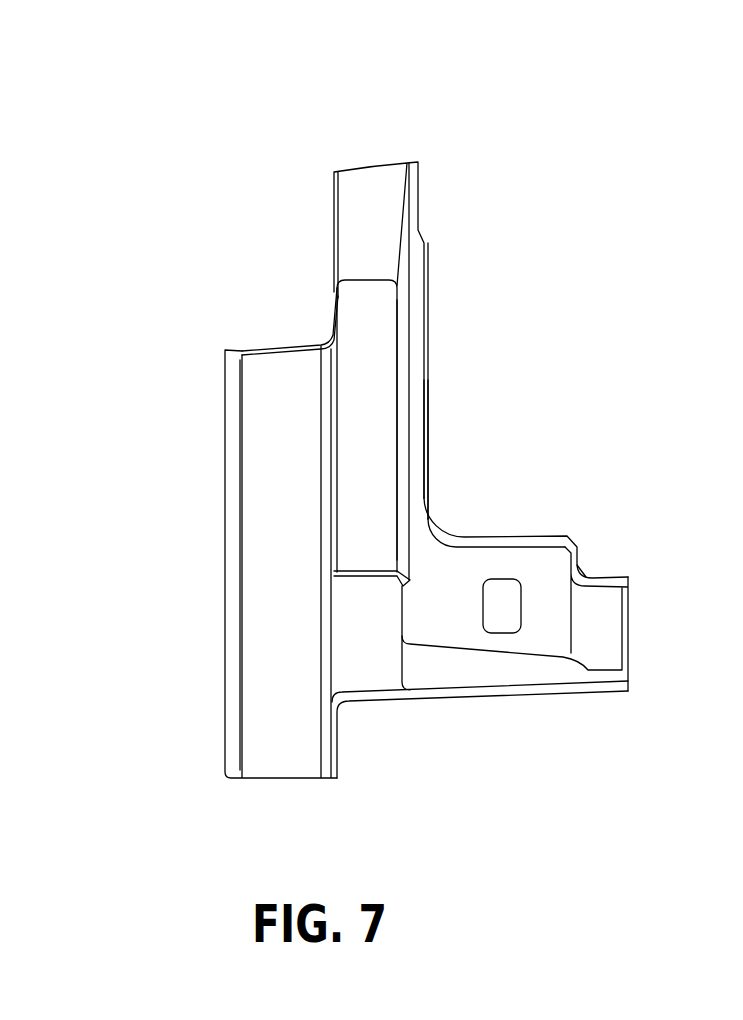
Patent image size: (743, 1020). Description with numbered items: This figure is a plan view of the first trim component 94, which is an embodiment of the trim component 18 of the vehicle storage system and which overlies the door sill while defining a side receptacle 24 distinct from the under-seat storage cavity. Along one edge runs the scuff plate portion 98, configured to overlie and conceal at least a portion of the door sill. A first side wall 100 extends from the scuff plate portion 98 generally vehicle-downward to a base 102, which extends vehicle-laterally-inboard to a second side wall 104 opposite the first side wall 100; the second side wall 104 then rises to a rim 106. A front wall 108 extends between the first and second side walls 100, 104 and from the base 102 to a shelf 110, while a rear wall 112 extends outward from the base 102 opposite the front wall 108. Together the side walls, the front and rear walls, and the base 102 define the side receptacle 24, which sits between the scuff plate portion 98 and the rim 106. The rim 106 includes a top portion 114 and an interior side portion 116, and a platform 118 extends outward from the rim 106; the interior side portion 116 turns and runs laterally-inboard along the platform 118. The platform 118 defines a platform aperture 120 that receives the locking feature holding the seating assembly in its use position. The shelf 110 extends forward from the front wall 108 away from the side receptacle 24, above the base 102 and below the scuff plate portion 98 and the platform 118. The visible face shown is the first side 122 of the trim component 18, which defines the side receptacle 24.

The trim component 18 is at (515, 153).
The side receptacle 24 is at (366, 468).
The first trim component 94 is at (467, 155).
The scuff plate portion 98 is at (260, 597).
The first side wall 100 is at (335, 350).
The base 102 is at (354, 402).
The second side wall 104 is at (400, 432).
The rim 106 is at (413, 330).
The front wall 108 is at (363, 570).
The shelf 110 is at (344, 651).
The rear wall 112 is at (358, 229).
The top portion 114 is at (422, 435).
The interior side portion 116 is at (493, 540).
The platform 118 is at (431, 607).
The platform aperture 120 is at (505, 612).
The first side 122 is at (287, 688).